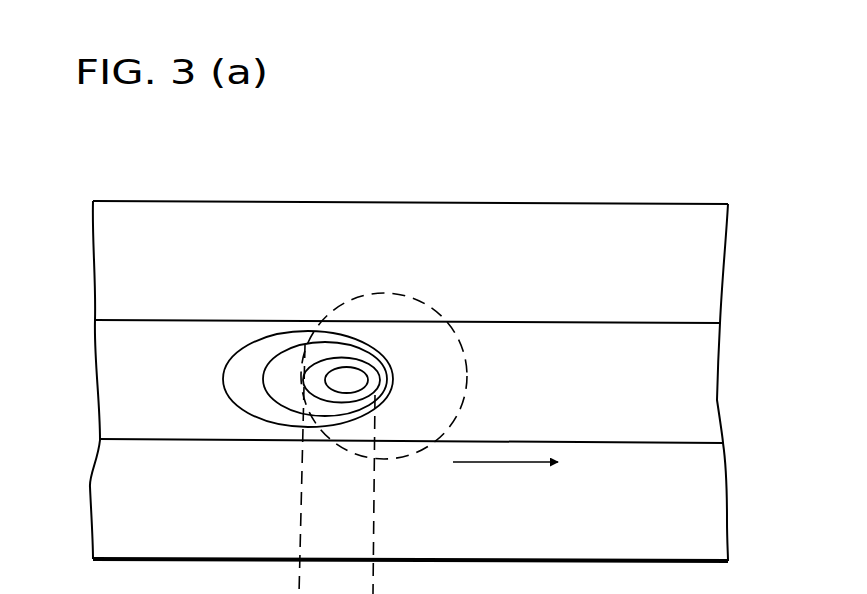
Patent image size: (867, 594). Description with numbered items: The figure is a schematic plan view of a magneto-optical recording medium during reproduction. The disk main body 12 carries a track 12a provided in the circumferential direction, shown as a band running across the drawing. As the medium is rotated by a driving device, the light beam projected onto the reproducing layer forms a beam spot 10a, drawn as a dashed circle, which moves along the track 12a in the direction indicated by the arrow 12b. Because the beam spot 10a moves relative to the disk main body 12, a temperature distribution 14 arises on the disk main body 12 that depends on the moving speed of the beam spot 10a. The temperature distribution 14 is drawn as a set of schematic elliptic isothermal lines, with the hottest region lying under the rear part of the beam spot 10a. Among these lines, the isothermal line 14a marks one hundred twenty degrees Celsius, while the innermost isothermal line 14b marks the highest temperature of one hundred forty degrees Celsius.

The disk main body 12 is at (499, 164).
The track 12a is at (667, 343).
The arrow 12b is at (520, 463).
The beam spot 10a is at (444, 313).
The temperature distribution 14 is at (265, 332).
The isothermal line 14a is at (325, 360).
The isothermal line 14b is at (345, 367).